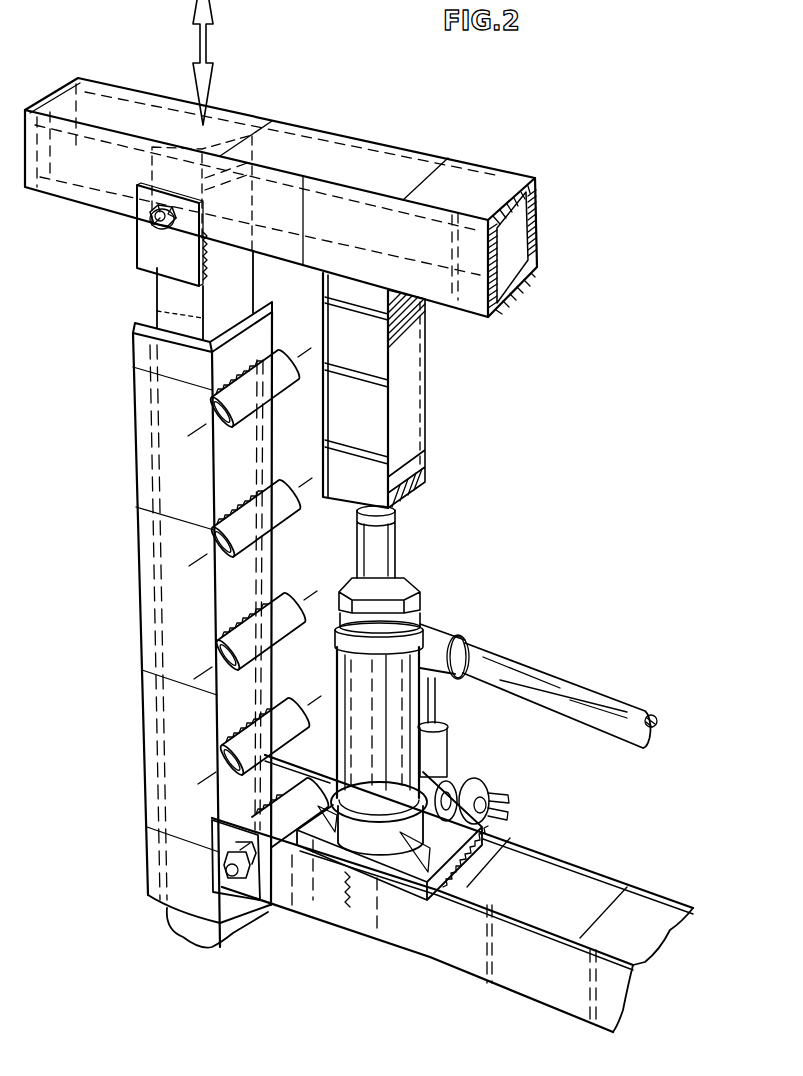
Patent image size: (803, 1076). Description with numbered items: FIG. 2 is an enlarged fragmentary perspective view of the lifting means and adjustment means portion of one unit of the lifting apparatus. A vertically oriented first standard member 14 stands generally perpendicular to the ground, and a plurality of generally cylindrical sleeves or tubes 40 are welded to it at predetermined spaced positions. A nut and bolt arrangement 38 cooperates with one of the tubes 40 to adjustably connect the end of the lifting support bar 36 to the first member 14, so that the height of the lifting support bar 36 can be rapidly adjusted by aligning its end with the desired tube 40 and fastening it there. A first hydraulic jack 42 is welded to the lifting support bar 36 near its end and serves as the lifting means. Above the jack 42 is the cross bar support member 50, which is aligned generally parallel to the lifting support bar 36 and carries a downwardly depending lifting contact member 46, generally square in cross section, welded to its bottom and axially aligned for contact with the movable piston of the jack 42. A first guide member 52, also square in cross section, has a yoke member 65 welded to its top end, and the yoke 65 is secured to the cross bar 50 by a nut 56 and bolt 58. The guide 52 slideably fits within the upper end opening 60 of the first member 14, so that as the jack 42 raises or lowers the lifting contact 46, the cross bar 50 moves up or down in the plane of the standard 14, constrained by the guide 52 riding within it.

The first vertically oriented standard member 14 is at (152, 800).
The adjustable lifting support bar 36 is at (456, 969).
The nut and bolt arrangement 38 is at (228, 867).
The cylindrical sleeve or tube 40 is at (246, 743).
The first hydraulic jack 42 is at (355, 666).
The lifting contact member 46 is at (410, 413).
The cross bar support member 50 is at (400, 158).
The first guide member 52 is at (165, 293).
The nut 56 is at (152, 211).
The bolt 58 is at (150, 222).
The upper end opening 60 is at (155, 318).
The yoke member 65 is at (148, 250).